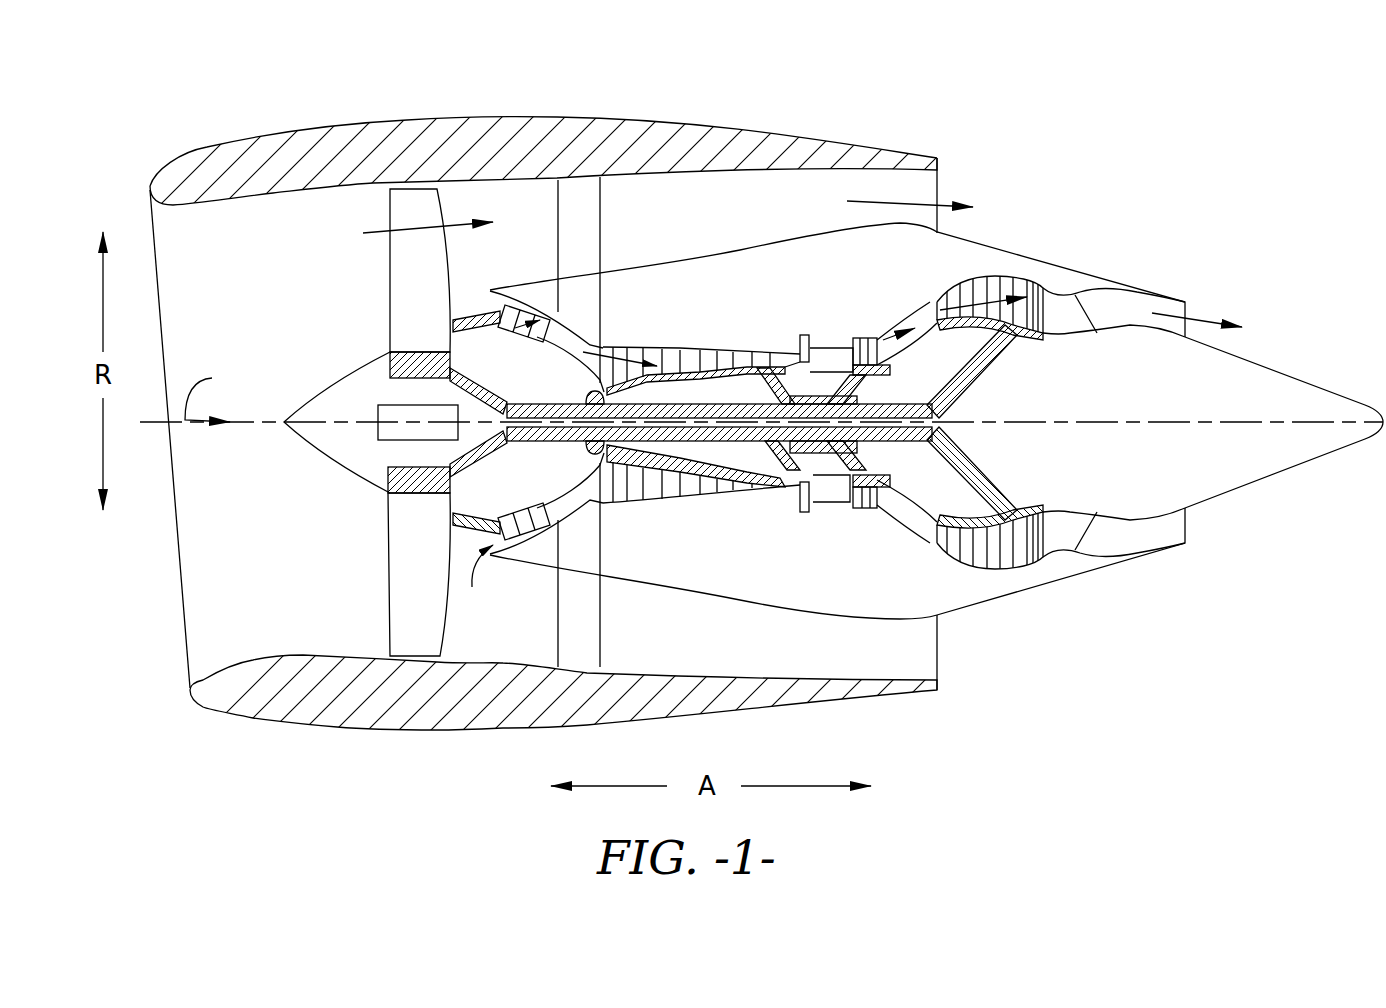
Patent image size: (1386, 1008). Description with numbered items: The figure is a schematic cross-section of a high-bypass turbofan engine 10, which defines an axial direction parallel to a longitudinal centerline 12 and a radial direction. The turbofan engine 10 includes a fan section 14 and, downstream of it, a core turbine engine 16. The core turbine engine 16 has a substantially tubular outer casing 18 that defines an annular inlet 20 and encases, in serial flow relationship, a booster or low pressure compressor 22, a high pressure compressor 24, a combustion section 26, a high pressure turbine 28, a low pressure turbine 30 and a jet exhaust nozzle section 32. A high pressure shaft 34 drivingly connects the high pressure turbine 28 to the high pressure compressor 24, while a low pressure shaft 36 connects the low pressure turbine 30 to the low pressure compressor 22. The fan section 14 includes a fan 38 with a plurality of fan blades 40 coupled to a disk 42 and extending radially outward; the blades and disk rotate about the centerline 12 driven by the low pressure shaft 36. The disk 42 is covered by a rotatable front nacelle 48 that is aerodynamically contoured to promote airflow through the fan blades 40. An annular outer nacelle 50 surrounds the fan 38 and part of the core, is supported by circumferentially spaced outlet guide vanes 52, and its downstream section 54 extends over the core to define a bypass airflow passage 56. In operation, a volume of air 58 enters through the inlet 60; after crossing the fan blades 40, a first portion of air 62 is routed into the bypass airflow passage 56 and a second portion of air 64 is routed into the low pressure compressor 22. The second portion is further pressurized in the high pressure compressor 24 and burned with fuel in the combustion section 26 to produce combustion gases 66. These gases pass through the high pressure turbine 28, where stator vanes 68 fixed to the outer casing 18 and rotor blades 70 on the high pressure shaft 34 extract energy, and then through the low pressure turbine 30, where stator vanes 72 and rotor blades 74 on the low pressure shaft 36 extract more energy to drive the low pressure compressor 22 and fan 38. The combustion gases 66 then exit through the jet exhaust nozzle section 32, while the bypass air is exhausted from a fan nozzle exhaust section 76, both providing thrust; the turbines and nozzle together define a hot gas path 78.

The turbofan engine 10 is at (1172, 186).
The longitudinal centerline 12 is at (1103, 420).
The fan section 14 is at (618, 159).
The core turbine engine 16 is at (763, 297).
The outer casing 18 is at (787, 612).
The annular inlet 20 is at (485, 581).
The low pressure compressor 22 is at (558, 515).
The high pressure compressor 24 is at (633, 497).
The combustion section 26 is at (817, 502).
The high pressure turbine 28 is at (897, 497).
The low pressure turbine 30 is at (1030, 577).
The jet exhaust nozzle section 32 is at (1190, 307).
The high pressure shaft 34 is at (850, 373).
The low pressure shaft 36 is at (557, 404).
The fan 38 is at (373, 273).
The fan blades 40 is at (383, 603).
The disk 42 is at (387, 363).
The rotatable front nacelle 48 is at (317, 393).
The outer nacelle 50 is at (453, 728).
The outlet guide vanes 52 is at (600, 200).
The downstream section of the nacelle 54 is at (753, 125).
The bypass airflow passage 56 is at (744, 216).
The volume of air 58 is at (218, 392).
The inlet 60 is at (185, 645).
The first portion of air 62 is at (403, 230).
The second portion of air 64 is at (470, 300).
The combustion gases 66 is at (873, 343).
The HP turbine stator vanes 68 is at (857, 508).
The HP turbine rotor blades 70 is at (875, 508).
The LP turbine stator vanes 72 is at (943, 547).
The LP turbine rotor blades 74 is at (953, 553).
The fan nozzle exhaust section 76 is at (937, 180).
The hot gas path 78 is at (922, 305).